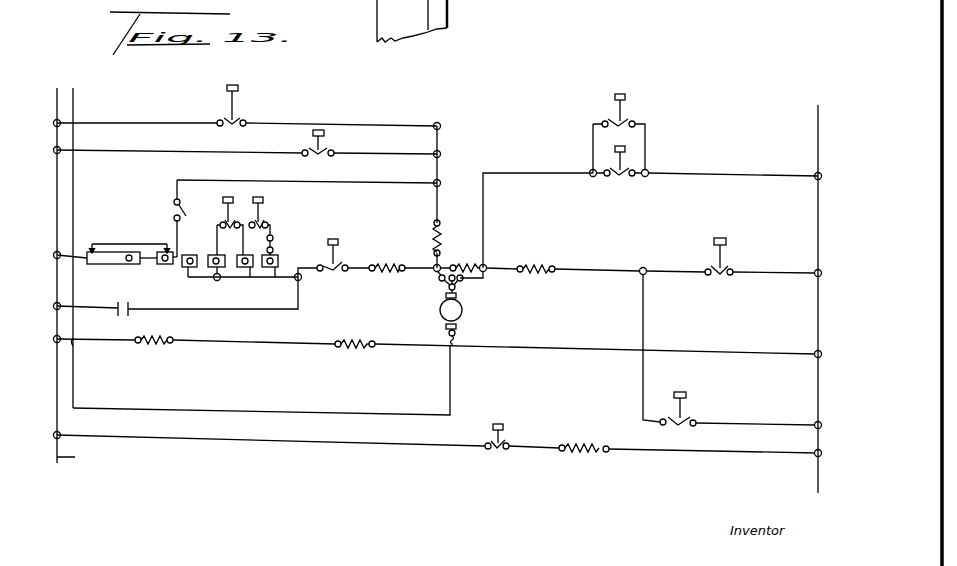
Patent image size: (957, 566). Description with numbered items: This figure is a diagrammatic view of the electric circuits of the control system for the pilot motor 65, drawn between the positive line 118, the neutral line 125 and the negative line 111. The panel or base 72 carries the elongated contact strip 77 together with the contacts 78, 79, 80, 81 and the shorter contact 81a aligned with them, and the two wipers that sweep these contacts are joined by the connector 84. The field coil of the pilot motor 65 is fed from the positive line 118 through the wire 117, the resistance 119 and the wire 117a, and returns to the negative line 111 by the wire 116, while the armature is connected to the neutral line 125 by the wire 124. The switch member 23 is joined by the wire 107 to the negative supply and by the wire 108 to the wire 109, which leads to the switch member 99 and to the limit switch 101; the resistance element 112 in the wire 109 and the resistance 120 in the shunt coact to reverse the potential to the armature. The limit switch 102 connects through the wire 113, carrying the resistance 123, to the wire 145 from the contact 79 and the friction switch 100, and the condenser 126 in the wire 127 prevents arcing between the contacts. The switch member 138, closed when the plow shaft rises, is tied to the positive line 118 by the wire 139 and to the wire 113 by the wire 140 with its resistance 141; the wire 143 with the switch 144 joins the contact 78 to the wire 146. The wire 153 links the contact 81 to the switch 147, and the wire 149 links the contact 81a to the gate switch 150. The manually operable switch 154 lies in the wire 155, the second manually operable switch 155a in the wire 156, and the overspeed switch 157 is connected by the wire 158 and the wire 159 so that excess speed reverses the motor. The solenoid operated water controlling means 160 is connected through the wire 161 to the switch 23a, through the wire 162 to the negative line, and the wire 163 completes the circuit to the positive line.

The panel or base 72 is at (449, 22).
The positive line 118 is at (80, 279).
The neutral line 125 is at (77, 393).
The wire 117 is at (78, 345).
The negative line 111 is at (817, 146).
The wire 155 is at (282, 122).
The manually operable switch 154 is at (240, 109).
The wire 139 is at (178, 153).
The switch member 138 is at (328, 140).
The wire 140 is at (362, 153).
The wire 143 is at (363, 182).
The resistance 141 is at (429, 232).
The wire 159 is at (591, 149).
The overspeed switch 157 is at (632, 112).
The wire 158 is at (650, 141).
The second manually operable switch 155a is at (645, 165).
The wire 156 is at (734, 180).
The connector 84 is at (113, 243).
The elongated contact strip 77 is at (93, 267).
The contact 78 is at (165, 267).
The switch 144 is at (169, 209).
The contact member 79 is at (197, 280).
The contact 80 is at (220, 280).
The contact 81 is at (250, 280).
The contact 81a is at (274, 280).
The switch 147 is at (221, 204).
The wire 146 is at (214, 244).
The wire 153 is at (243, 256).
The switch 150 is at (266, 201).
The wire 149 is at (275, 237).
The wire 127 is at (240, 311).
The condenser 126 is at (116, 303).
The wire 145 is at (294, 266).
The friction switch 100 is at (341, 241).
The wire 113 is at (354, 270).
The resistance 123 is at (392, 270).
The resistance 120 is at (465, 263).
The resistance element 112 is at (535, 266).
The wire 109 is at (620, 270).
The switch member 99 is at (727, 251).
The limit switch 102 is at (439, 280).
The limit switch 101 is at (461, 288).
The pilot motor 65 is at (440, 313).
The resistance 119 is at (153, 352).
The wire 117a is at (211, 353).
The wire 116 is at (497, 352).
The wire 124 is at (258, 413).
The wire 108 is at (641, 406).
The switch member 23 is at (688, 410).
The wire 107 is at (742, 421).
The wire 163 is at (430, 444).
The switch 23a is at (498, 424).
The wire 161 is at (530, 453).
The solenoid operated water controlling means 160 is at (583, 456).
The wire 162 is at (684, 458).